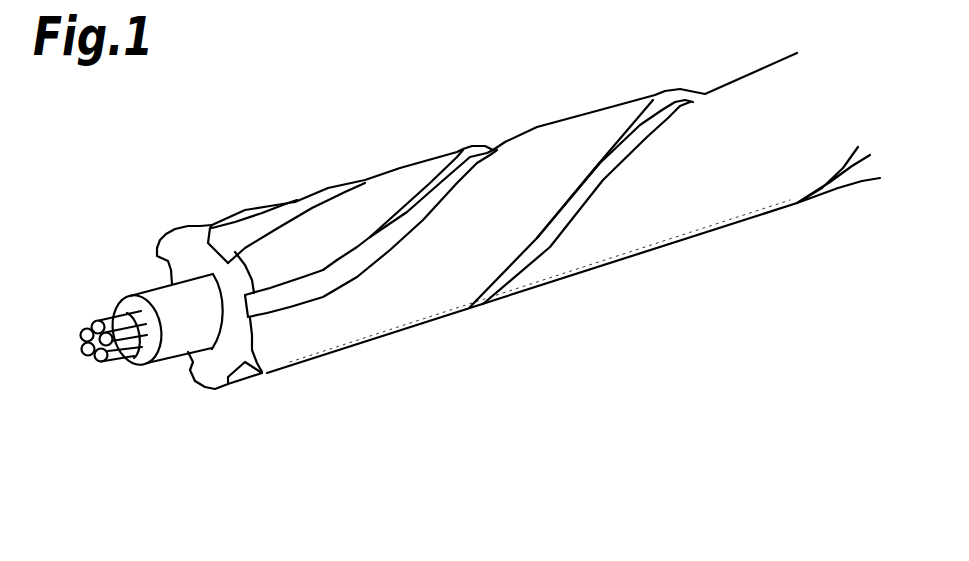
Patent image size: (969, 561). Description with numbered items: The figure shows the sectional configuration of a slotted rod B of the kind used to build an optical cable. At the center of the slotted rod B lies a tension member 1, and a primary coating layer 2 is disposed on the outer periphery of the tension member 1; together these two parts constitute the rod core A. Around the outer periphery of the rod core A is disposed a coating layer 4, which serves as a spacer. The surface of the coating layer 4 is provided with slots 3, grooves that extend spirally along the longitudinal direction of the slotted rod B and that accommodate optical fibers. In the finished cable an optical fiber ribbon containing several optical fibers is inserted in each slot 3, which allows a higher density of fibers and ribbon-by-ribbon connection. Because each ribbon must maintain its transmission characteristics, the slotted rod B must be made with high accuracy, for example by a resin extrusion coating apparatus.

The tension member 1 is at (120, 366).
The primary coating layer 2 is at (178, 352).
The slots 3 is at (303, 292).
The coating layer 4 is at (262, 315).
The rod core A is at (120, 440).
The slotted rod B is at (152, 485).